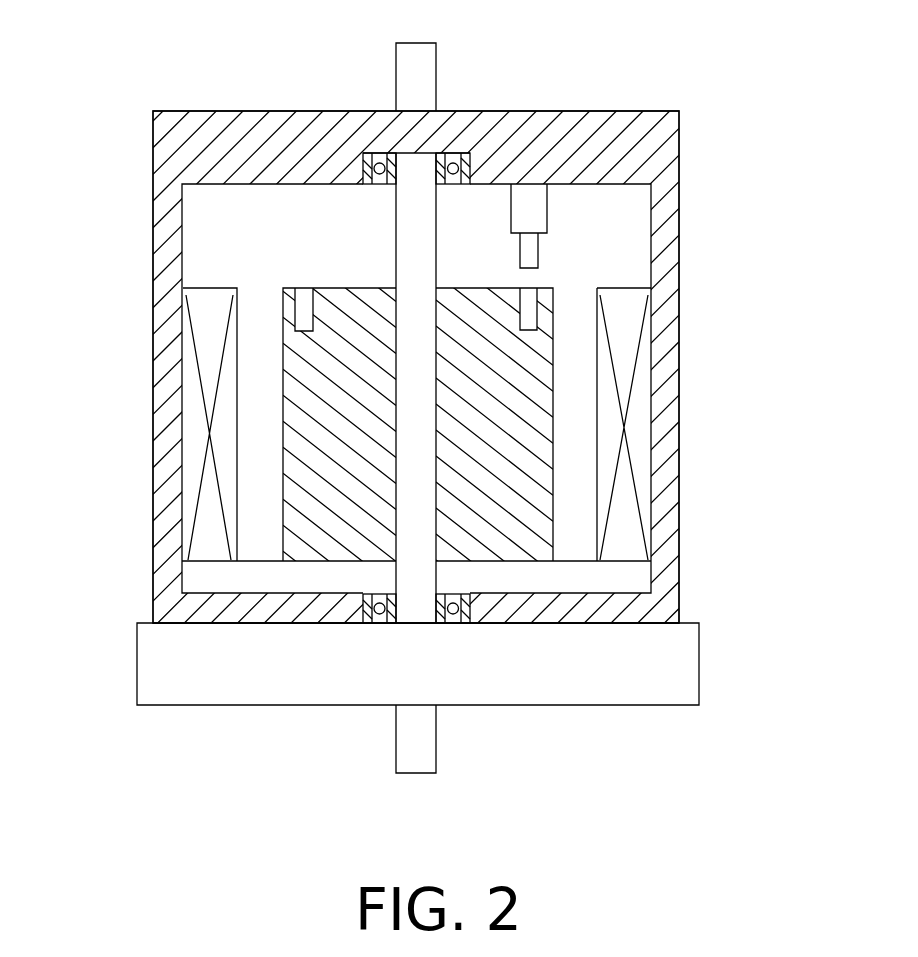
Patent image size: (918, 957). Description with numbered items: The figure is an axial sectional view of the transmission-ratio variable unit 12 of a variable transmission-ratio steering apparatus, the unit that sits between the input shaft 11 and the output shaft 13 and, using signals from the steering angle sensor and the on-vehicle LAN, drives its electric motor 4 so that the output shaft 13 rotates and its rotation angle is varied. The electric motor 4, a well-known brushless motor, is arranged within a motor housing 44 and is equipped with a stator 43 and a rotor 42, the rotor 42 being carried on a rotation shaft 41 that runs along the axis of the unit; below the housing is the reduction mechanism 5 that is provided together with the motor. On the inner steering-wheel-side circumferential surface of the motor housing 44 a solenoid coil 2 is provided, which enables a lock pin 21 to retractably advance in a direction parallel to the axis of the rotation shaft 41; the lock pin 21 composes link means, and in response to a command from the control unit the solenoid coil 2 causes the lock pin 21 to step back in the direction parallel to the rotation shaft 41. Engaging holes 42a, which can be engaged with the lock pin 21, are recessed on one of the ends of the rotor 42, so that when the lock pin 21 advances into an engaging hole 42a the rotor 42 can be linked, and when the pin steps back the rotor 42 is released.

The solenoid coil 2 is at (533, 210).
The electric motor 4 is at (201, 567).
The reduction mechanism 5 is at (630, 692).
The input shaft 11 is at (436, 77).
The transmission-ratio variable unit 12 is at (735, 629).
The output shaft 13 is at (437, 745).
The lock pin 21 is at (530, 249).
The rotation shaft 41 is at (420, 232).
The rotor 42 is at (512, 472).
The engaging holes 42a is at (303, 310).
The stator 43 is at (640, 404).
The motor housing 44 is at (662, 150).